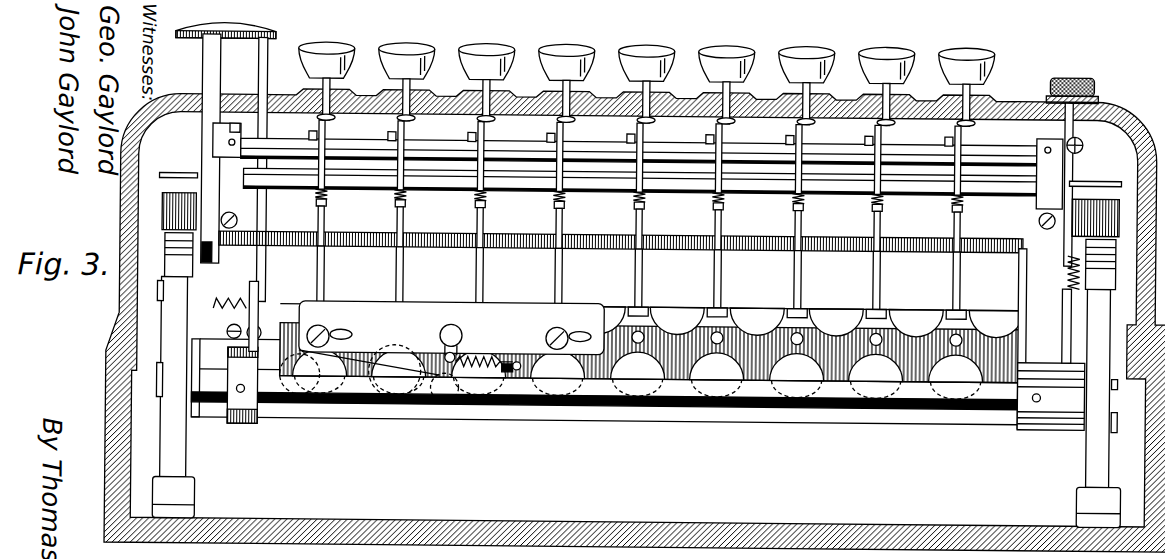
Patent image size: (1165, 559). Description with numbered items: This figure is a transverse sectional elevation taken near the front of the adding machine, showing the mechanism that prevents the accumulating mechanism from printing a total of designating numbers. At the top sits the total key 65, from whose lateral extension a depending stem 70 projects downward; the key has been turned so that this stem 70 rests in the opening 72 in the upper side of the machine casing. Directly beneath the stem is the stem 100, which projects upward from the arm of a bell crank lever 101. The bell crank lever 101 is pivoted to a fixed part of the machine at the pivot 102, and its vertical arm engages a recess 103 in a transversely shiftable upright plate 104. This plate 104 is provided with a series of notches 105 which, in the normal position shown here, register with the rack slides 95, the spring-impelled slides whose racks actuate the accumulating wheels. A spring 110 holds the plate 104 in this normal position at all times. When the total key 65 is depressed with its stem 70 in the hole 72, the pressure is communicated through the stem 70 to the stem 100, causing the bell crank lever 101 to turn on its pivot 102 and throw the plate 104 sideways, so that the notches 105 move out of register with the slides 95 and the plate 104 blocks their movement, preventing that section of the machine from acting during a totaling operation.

The total key 65 is at (228, 21).
The depending stem 70 is at (253, 61).
The opening 72 is at (263, 92).
The stem 100 is at (258, 135).
The rack slides 95 is at (392, 265).
The notches 105 is at (391, 306).
The upright plate 104 is at (451, 328).
The bell crank lever 101 is at (350, 368).
The recess 103 is at (459, 334).
The spring 110 is at (485, 366).
The pivot 102 is at (445, 384).